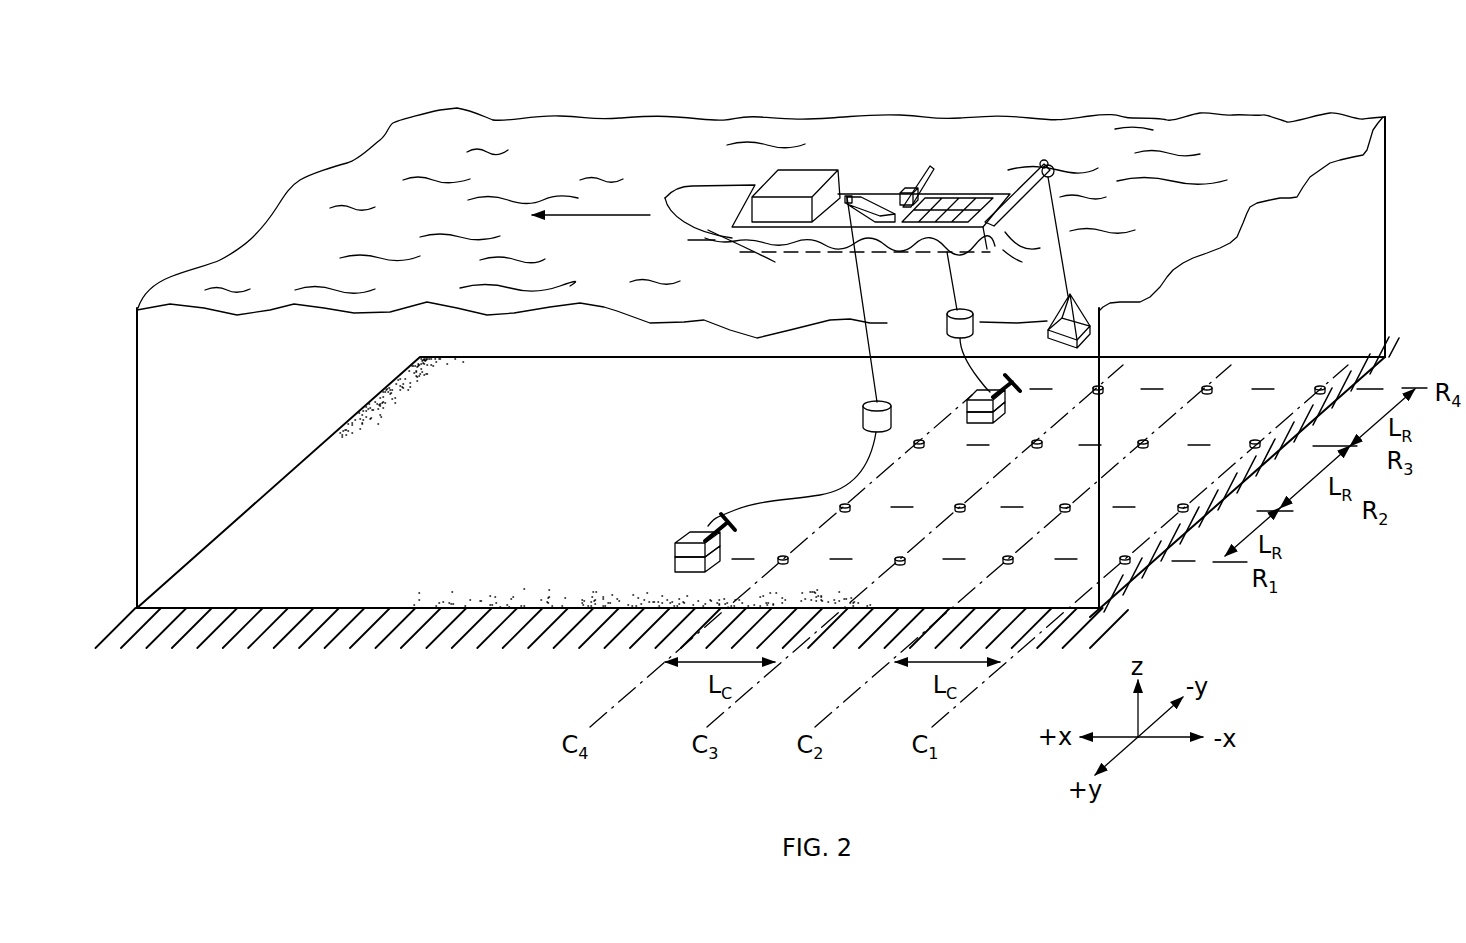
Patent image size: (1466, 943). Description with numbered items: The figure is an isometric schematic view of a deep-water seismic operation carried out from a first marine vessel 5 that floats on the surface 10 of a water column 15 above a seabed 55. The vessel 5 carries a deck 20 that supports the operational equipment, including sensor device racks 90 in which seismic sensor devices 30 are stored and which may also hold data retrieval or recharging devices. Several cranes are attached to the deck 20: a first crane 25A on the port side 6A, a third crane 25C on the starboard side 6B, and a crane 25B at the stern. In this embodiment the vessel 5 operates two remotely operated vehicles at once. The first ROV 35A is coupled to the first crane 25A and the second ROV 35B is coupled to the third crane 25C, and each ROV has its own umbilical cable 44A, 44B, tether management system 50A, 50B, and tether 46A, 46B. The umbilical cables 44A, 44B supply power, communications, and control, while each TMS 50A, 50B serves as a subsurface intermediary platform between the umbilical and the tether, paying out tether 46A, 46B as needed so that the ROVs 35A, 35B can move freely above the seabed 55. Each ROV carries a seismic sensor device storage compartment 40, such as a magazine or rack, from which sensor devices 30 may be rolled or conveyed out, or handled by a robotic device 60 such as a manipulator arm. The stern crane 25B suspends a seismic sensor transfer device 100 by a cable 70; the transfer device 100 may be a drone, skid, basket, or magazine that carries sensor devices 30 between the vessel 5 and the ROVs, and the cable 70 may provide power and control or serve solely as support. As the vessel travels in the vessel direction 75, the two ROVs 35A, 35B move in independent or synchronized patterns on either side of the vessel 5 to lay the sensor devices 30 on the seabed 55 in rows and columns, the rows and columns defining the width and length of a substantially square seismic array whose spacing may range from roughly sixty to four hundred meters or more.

The first marine vessel 5 is at (708, 183).
The port side 6A is at (712, 231).
The starboard side 6B is at (886, 196).
The surface 10 is at (1225, 118).
The water column 15 is at (1360, 233).
The deck 20 is at (1003, 195).
The crane 25A is at (847, 196).
The crane 25B is at (1046, 162).
The third crane 25C is at (921, 190).
The sensor devices 30 is at (1104, 387).
The ROV 35A is at (675, 550).
The ROV 35B is at (967, 407).
The seismic sensor device storage compartment 40 is at (980, 423).
The umbilical cable 44A is at (857, 297).
The umbilical cable 44B is at (947, 262).
The tether 46A is at (752, 500).
The tether 46B is at (966, 366).
The tether management system 50A is at (862, 412).
The tether management system 50B is at (949, 318).
The seabed 55 is at (800, 598).
The robotic device 60 is at (1017, 378).
The cable 70 is at (1072, 261).
The vessel direction 75 is at (590, 220).
The sensor device racks 90 is at (960, 200).
The seismic sensor transfer device 100 is at (1052, 318).